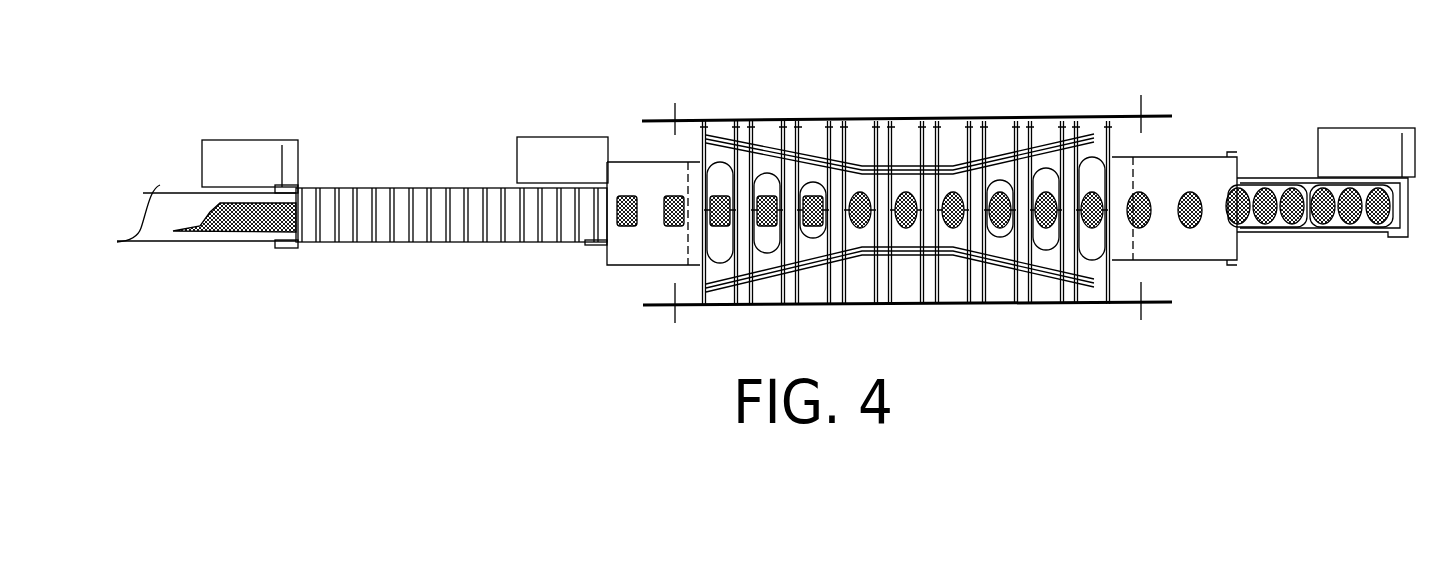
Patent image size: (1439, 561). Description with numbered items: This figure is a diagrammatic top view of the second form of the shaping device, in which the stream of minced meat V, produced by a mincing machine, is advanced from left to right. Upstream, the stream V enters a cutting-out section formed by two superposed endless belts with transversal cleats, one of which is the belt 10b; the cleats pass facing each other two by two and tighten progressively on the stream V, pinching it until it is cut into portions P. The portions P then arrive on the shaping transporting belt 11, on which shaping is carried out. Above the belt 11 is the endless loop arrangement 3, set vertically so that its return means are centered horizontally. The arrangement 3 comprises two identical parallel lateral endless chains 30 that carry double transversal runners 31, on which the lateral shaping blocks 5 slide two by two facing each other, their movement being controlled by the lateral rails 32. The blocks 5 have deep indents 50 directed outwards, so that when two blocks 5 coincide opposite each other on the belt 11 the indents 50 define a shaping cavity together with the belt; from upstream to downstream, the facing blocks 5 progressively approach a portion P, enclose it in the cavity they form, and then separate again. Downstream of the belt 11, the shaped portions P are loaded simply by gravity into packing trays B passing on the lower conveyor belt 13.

The endless loop arrangement 3 is at (1094, 77).
The lateral shaping block 5 is at (668, 142).
The lateral endless chain 30 is at (957, 303).
The double transversal runner 31 is at (872, 142).
The lateral rail 32 is at (757, 150).
The deep indent 50 is at (1100, 180).
The portion P is at (1200, 195).
The packing tray B is at (1280, 184).
The lower conveyor belt 13 is at (1340, 236).
The shaping transporting belt 11 is at (1188, 252).
The endless belt with transversal cleats 10b is at (401, 195).
The stream of minced meat V is at (215, 236).